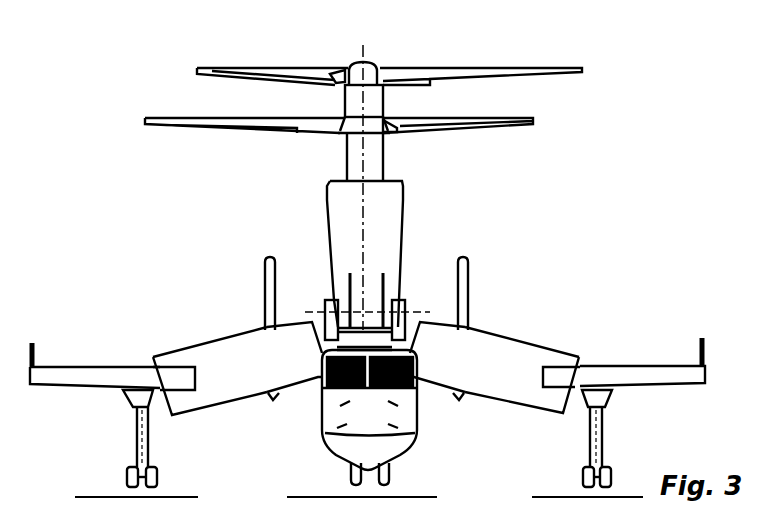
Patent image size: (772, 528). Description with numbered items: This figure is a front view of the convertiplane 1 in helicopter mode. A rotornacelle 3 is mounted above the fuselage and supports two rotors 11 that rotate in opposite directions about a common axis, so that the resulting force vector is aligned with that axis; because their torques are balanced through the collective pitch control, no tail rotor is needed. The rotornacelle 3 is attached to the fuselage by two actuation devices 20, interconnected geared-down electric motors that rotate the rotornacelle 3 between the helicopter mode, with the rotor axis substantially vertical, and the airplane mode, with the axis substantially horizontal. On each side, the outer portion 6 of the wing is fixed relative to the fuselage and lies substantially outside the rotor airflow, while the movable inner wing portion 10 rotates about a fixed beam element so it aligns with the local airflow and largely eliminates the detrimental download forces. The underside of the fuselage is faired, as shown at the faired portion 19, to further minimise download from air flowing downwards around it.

The convertiplane 1 is at (73, 92).
The rotornacelle 3 is at (383, 220).
The outer portion 6 is at (97, 377).
The inner wing portion 10 is at (217, 365).
The rotor 11 is at (588, 72).
The faired portion 19 is at (373, 447).
The actuation device 20 is at (338, 298).